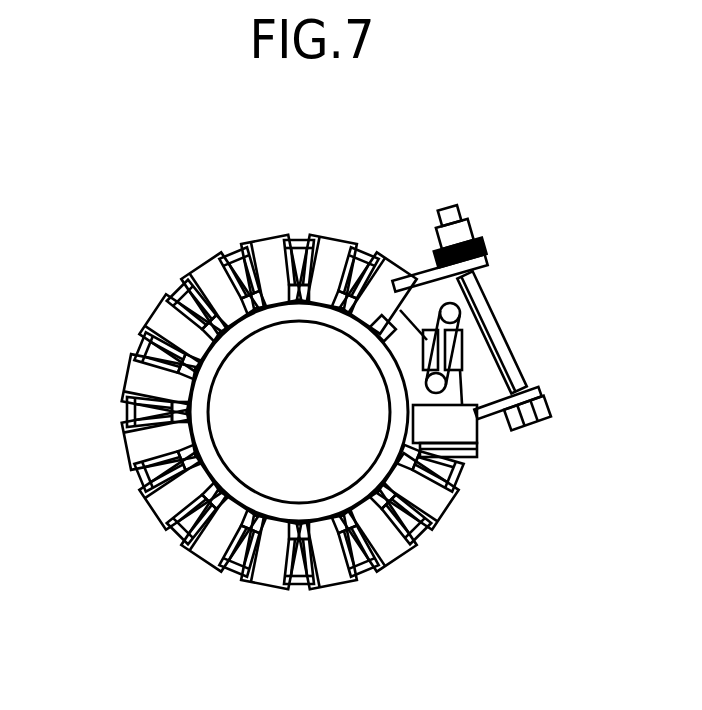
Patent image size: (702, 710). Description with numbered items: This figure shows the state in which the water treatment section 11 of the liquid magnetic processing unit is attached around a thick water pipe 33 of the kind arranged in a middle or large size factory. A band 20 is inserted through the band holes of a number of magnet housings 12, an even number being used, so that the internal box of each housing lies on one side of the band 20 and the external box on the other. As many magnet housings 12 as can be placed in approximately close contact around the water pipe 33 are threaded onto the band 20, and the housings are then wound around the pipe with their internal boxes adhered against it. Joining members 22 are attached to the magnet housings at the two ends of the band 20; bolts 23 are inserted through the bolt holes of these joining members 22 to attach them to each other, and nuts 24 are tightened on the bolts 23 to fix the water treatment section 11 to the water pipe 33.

The water treatment section 11 is at (207, 209).
The magnet housing 12 is at (200, 263).
The band 20 is at (371, 258).
The joining member 22 is at (415, 255).
The bolt 23 is at (502, 330).
The nut 24 is at (472, 240).
The water pipe 33 is at (210, 413).